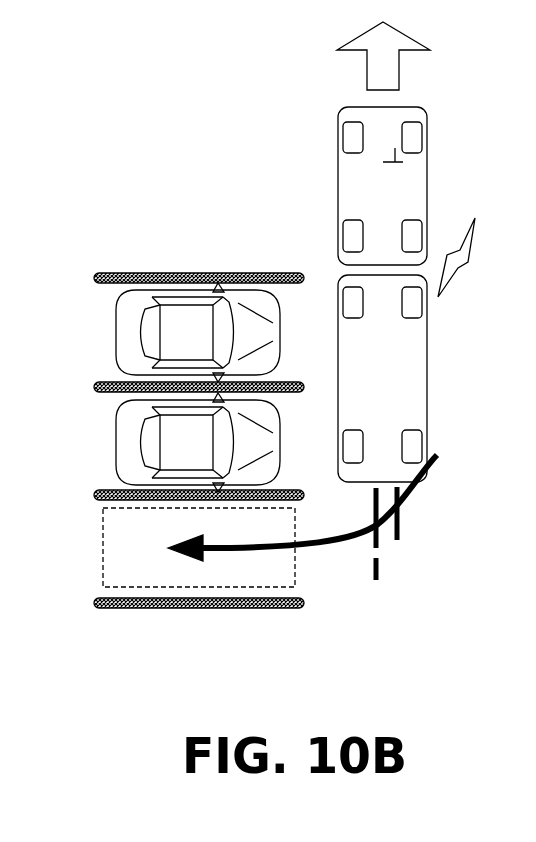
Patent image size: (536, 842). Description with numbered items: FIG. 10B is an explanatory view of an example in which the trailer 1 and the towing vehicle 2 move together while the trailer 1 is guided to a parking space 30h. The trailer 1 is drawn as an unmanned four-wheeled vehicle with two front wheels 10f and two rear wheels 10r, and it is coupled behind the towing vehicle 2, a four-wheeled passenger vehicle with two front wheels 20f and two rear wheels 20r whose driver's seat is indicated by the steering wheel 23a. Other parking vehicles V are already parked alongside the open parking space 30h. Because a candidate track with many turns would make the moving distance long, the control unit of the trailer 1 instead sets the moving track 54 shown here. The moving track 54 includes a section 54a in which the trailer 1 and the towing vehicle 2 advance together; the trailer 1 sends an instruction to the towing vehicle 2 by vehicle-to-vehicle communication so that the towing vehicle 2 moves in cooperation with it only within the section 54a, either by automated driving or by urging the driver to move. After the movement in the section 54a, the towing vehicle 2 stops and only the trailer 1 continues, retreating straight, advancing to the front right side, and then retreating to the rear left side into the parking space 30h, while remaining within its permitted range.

The trailer 1 is at (427, 390).
The towing vehicle 2 is at (427, 198).
The front wheels 10f is at (427, 313).
The rear wheels 10r is at (427, 437).
The front wheels 20f is at (427, 118).
The rear wheels 20r is at (338, 232).
The steering wheel 23a is at (403, 162).
The parking space 30h is at (127, 588).
The moving track 54 is at (438, 512).
The section 54a is at (380, 575).
The other parking vehicles V is at (116, 336).